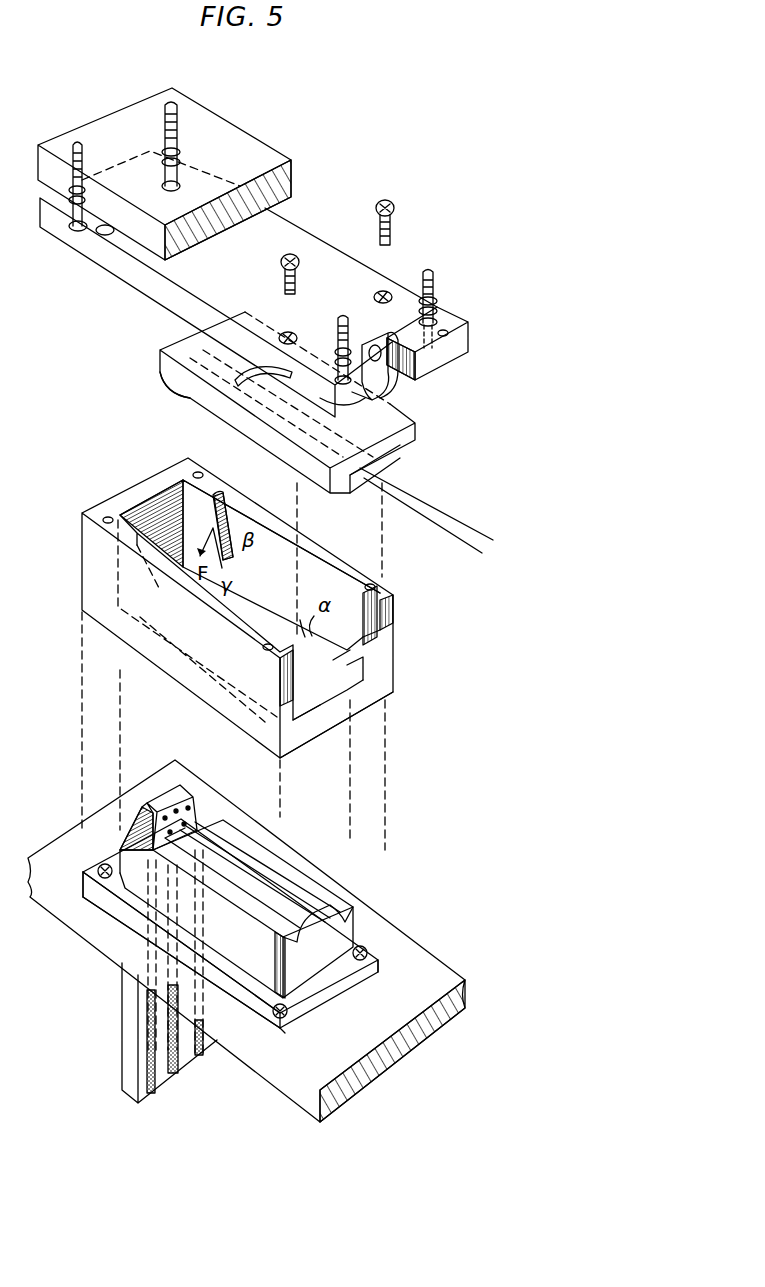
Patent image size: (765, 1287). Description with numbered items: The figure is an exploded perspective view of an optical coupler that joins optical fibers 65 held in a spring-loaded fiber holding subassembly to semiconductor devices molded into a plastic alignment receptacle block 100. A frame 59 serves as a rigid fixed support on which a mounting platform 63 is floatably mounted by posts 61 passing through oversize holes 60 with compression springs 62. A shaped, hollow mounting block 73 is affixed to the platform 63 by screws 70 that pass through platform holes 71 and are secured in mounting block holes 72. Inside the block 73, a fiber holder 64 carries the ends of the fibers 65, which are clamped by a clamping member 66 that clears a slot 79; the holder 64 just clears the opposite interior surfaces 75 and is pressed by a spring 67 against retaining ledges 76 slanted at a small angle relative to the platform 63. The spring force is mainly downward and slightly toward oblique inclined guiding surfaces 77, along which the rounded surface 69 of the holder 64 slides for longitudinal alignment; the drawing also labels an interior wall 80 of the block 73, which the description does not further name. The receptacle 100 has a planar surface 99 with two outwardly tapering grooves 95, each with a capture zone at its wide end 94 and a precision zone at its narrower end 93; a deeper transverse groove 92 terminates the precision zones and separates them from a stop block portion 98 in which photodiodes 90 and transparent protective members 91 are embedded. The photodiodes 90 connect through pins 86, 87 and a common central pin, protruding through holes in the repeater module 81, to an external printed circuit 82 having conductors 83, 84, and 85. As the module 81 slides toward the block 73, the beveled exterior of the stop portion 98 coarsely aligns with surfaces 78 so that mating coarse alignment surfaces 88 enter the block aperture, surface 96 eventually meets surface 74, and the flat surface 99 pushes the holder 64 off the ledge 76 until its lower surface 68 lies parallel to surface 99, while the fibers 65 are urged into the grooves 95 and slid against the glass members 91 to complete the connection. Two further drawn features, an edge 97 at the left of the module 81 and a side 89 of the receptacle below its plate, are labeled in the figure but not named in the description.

The frame 59 is at (243, 136).
The oversize holes 60 is at (458, 320).
The posts 61 is at (434, 272).
The compression springs 62 is at (437, 309).
The mounting platform 63 is at (83, 249).
The fiber holder 64 is at (417, 433).
The optical fibers 65 is at (440, 517).
The clamping member 66 is at (398, 465).
The spring 67 is at (398, 378).
The lower surface 68 is at (190, 398).
The rounded surface 69 is at (162, 362).
The screws 70 is at (292, 273).
The platform holes 71 is at (290, 333).
The mounting block holes 72 is at (147, 462).
The mounting block 73 is at (82, 577).
The surface 74 is at (333, 728).
The opposite surfaces 75 is at (382, 615).
The retaining ledges 76 is at (350, 640).
The oblique inclined guiding surfaces 77 is at (223, 522).
The coarse alignment surfaces 78 is at (362, 668).
The slot 79 is at (340, 702).
The inner wall 80 is at (306, 548).
The repeater module 81 is at (105, 940).
The external printed circuit 82 is at (122, 1066).
The conductor 83 is at (150, 1092).
The conductor 84 is at (175, 1073).
The conductor 85 is at (200, 1054).
The pin 86 is at (130, 955).
The pin 87 is at (250, 852).
The mating coarse alignment surfaces 88 is at (313, 975).
The plate edge 89 is at (300, 1032).
The photodiodes 90 is at (170, 795).
The transparent protective members 91 is at (158, 824).
The transverse groove 92 is at (100, 900).
The precision zones 93 is at (205, 830).
The capture zones 94 is at (320, 880).
The outwardly tapering grooves 95 is at (292, 897).
The alignment block surface 96 is at (345, 970).
The edge 97 is at (83, 873).
The stop block portion 98 is at (145, 818).
The planar surface 99 is at (260, 832).
The alignment receptacle block 100 is at (124, 842).